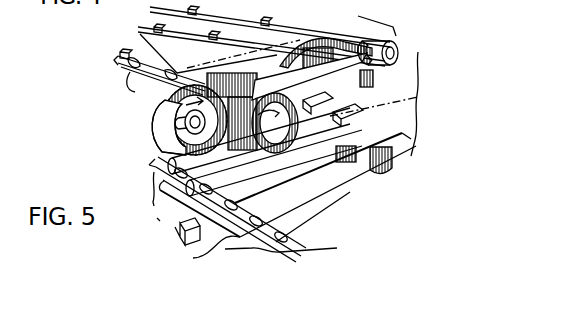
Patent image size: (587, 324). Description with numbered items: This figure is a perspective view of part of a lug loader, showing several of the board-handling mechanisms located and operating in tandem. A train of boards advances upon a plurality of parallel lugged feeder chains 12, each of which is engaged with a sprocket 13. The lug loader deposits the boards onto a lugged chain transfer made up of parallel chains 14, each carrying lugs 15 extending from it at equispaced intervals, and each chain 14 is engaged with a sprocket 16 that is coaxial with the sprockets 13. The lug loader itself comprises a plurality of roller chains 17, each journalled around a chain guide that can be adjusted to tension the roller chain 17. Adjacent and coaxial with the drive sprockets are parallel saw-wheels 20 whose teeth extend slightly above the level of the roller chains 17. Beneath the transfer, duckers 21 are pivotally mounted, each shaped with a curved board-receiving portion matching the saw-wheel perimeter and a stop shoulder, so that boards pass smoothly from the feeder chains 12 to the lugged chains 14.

The lugged feeder chain 12 is at (193, 258).
The sprocket 13 is at (288, 48).
The chain 14 is at (144, 74).
The lug 15 is at (124, 54).
The sprocket 16 is at (158, 112).
The roller chain 17 is at (390, 44).
The saw-wheel 20 is at (176, 106).
The ducker 21 is at (163, 180).